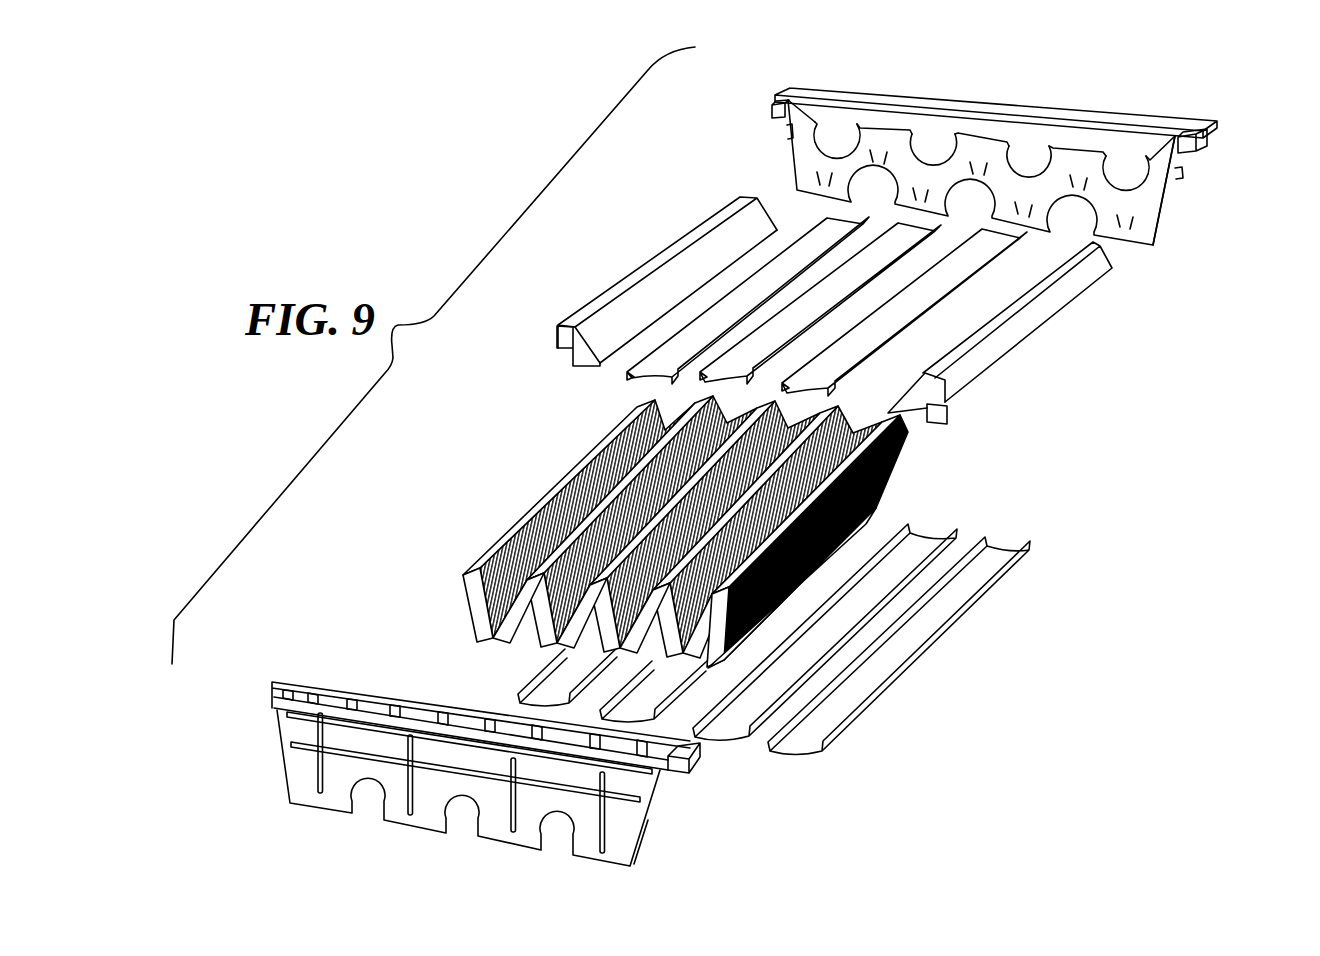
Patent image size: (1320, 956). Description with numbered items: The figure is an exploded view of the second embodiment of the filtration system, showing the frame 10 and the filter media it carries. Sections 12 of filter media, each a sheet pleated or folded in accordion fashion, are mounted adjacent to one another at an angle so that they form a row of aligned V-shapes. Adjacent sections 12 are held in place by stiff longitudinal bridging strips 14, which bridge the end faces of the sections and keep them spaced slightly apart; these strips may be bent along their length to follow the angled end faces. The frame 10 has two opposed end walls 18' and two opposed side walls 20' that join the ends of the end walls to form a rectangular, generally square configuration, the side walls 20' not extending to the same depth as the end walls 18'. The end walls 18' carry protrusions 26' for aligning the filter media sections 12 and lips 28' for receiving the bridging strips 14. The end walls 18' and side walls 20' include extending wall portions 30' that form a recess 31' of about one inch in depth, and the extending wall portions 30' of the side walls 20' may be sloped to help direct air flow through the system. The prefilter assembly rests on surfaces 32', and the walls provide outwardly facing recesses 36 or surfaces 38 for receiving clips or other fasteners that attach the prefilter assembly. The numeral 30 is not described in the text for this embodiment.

The frame 10 is at (731, 133).
The sections of filter media 12 is at (540, 640).
The bridging strips 14 is at (827, 293).
The end walls 18' is at (758, 485).
The side walls 20' is at (843, 305).
The protrusions 26' is at (981, 141).
The lips 28' is at (1016, 111).
The upper plate portion 30 is at (812, 81).
The extending wall portions 30' is at (688, 289).
The recess 31' is at (880, 217).
The surfaces 32' is at (996, 221).
The outwardly facing recesses 36 is at (1212, 134).
The surfaces 38 is at (568, 352).